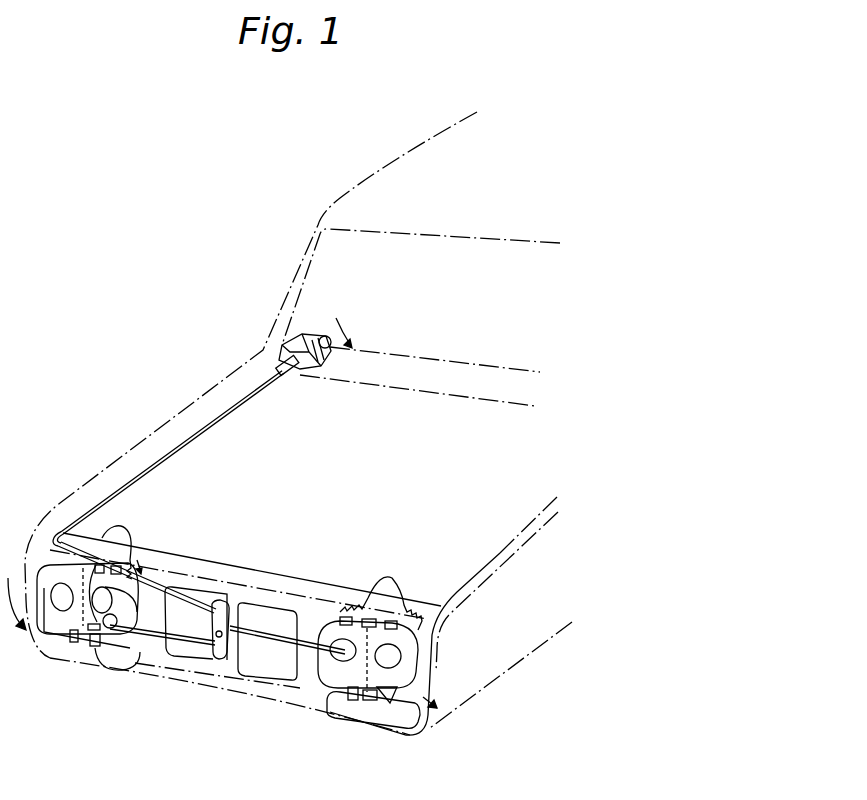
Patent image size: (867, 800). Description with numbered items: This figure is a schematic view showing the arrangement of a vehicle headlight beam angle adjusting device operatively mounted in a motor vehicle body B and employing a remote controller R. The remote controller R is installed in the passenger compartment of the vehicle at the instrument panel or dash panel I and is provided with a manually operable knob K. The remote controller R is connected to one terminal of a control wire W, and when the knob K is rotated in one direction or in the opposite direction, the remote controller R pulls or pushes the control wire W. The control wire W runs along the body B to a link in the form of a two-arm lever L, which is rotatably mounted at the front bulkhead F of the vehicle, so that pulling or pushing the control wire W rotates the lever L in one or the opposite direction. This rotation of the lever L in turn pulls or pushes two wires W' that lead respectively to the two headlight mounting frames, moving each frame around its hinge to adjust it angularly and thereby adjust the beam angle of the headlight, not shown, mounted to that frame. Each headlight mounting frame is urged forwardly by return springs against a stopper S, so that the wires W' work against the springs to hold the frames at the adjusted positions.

The vehicle body B is at (117, 462).
The instrument panel I is at (433, 355).
The remote controller R is at (278, 352).
The knob K is at (322, 336).
The control wire W is at (168, 458).
The wires W' is at (201, 643).
The two-arm lever L is at (232, 598).
The front panel F is at (200, 565).
The stopper S is at (102, 653).